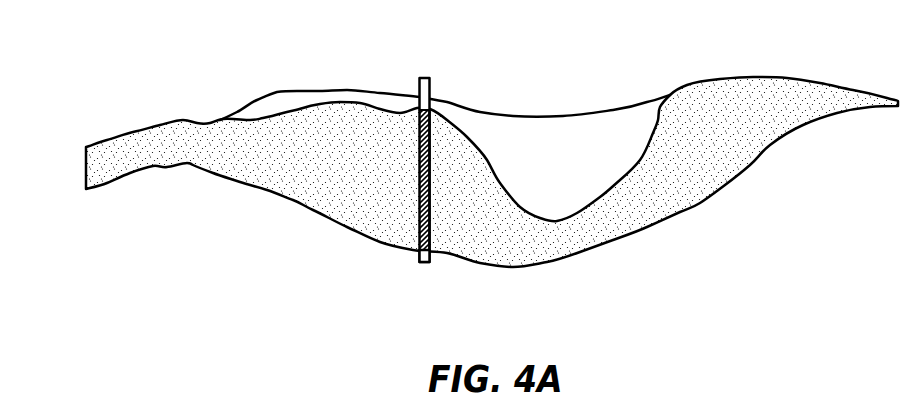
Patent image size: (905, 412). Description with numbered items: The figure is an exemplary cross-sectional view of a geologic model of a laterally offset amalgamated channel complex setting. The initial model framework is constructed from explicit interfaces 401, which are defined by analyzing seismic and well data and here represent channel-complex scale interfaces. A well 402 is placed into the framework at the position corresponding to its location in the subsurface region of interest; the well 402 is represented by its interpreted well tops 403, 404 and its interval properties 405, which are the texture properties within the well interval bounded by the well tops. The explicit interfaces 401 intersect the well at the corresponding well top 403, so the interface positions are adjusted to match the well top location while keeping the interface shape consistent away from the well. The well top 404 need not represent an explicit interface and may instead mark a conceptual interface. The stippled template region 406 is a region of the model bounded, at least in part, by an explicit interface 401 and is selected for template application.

The explicit interfaces 401 is at (620, 182).
The well 402 is at (425, 77).
The well top 403 is at (429, 252).
The well top 404 is at (430, 170).
The interval properties 405 is at (418, 147).
The template region 406 is at (678, 182).